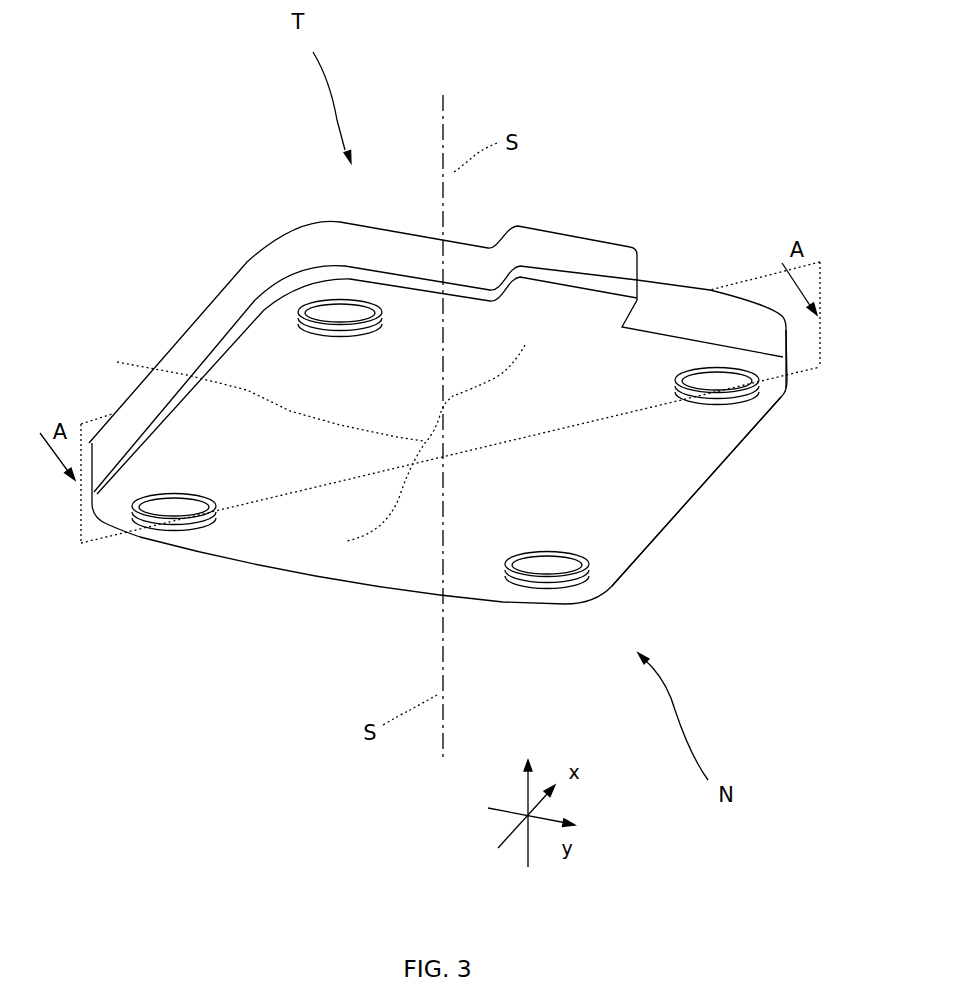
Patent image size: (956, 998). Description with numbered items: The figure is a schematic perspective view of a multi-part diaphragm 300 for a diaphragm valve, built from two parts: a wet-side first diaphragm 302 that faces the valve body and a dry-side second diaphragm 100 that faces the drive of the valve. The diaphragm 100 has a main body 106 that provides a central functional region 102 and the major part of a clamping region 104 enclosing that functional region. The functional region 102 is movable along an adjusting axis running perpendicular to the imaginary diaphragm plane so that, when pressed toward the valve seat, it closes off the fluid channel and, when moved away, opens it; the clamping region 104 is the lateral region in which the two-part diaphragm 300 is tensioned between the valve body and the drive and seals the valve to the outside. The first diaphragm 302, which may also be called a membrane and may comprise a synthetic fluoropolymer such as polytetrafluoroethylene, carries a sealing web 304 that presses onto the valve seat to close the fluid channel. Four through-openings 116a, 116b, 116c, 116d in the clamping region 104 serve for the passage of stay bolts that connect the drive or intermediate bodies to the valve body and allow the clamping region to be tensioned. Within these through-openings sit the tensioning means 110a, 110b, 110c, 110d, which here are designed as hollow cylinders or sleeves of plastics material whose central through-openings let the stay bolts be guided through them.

The multi-part diaphragm 300 is at (112, 205).
The diaphragm 100 is at (260, 278).
The functional region 102 is at (369, 505).
The clamping region 104 is at (632, 530).
The main body 106 is at (197, 347).
The first diaphragm 302 is at (228, 316).
The sealing web 304 is at (295, 443).
The through-opening 116a is at (340, 313).
The tensioning means 110a is at (370, 310).
The through-opening 116b is at (702, 387).
The tensioning means 110b is at (757, 383).
The through-opening 116c is at (550, 570).
The tensioning means 110c is at (513, 580).
The through-opening 116d is at (163, 510).
The tensioning means 110d is at (203, 523).